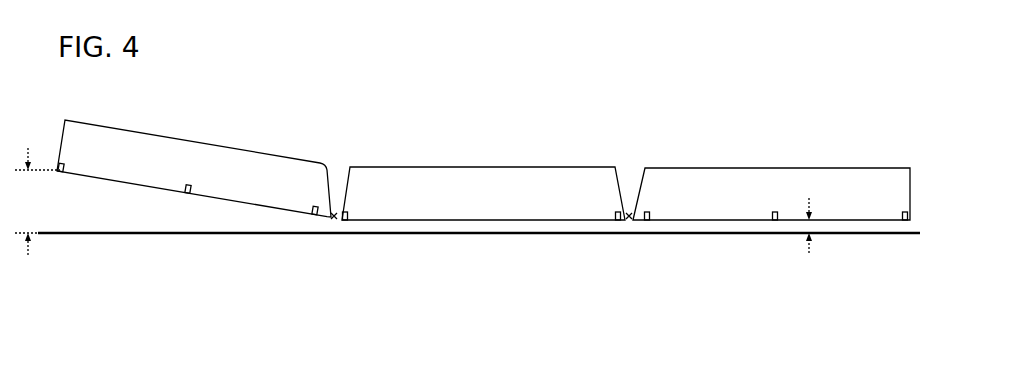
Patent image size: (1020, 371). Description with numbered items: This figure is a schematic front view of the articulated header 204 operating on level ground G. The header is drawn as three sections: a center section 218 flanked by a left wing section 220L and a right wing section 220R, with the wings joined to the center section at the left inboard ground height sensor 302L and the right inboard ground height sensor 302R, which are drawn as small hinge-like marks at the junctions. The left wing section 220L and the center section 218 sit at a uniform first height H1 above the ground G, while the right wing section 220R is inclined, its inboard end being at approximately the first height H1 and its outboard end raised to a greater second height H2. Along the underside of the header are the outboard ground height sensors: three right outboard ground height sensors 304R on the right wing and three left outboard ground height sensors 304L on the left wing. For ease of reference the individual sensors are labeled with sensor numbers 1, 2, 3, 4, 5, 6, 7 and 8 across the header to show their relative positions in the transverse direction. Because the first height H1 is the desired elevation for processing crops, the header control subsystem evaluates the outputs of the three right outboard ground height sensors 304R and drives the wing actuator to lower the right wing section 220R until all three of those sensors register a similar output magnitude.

The articulated header 204 is at (818, 116).
The center panel 218 is at (475, 168).
The right wing section 220R is at (192, 165).
The left wing section 220L is at (710, 168).
The right inboard ground height sensor 302R is at (338, 219).
The left inboard ground height sensor 302L is at (623, 220).
The right outboard ground height sensors 304R is at (188, 226).
The left outboard ground height sensors 304L is at (625, 270).
The level ground G is at (447, 234).
The first height H1 is at (812, 226).
The second height H2 is at (37, 201).
The sensor 1 is at (65, 160).
The sensor 2 is at (193, 185).
The sensor 3 is at (314, 204).
The sensor 4 is at (349, 210).
The sensor 5 is at (611, 210).
The sensor 6 is at (649, 209).
The sensor 7 is at (771, 209).
The sensor 8 is at (903, 209).